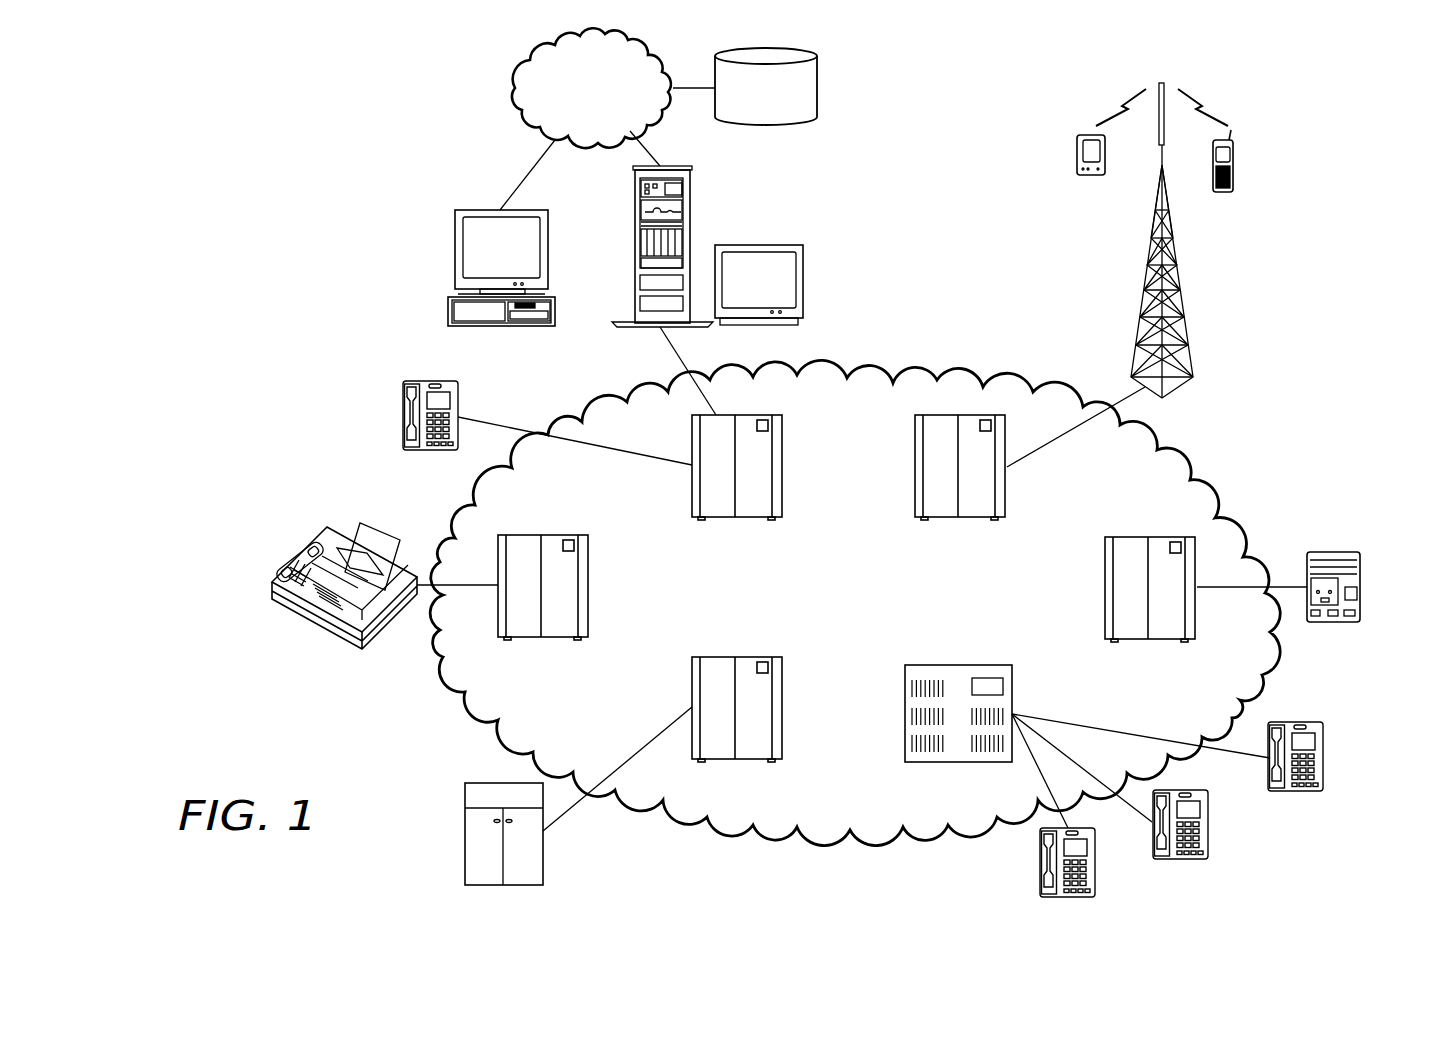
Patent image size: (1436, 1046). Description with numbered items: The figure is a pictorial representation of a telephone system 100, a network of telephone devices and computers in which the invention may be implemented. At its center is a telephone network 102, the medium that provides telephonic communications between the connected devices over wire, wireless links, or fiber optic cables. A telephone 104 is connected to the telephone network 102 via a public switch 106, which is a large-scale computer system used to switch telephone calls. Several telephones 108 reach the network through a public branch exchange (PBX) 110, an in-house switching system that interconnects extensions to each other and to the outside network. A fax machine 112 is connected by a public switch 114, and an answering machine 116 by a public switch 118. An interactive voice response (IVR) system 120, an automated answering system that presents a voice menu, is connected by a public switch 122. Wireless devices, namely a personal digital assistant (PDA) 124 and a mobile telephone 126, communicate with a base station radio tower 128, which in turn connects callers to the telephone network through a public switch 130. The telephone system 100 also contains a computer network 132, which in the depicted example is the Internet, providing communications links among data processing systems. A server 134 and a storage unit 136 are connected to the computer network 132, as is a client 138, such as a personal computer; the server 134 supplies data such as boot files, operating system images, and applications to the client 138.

The telephone system 100 is at (242, 161).
The telephone network 102 is at (933, 373).
The telephone 104 is at (403, 413).
The public switch 106 is at (782, 455).
The telephones 108 is at (1040, 862).
The public branch exchange (PBX) 110 is at (905, 713).
The fax machine 112 is at (295, 556).
The public switch 114 is at (588, 585).
The answering machine 116 is at (1332, 552).
The public switch 118 is at (1105, 585).
The interactive voice response (IVR) system 120 is at (465, 835).
The public switch 122 is at (718, 657).
The personal digital assistant (PDA) 124 is at (1075, 155).
The mobile telephone 126 is at (1235, 166).
The base station radio tower 128 is at (1190, 306).
The public switch 130 is at (1007, 485).
The computer network 132 is at (515, 86).
The server 134 is at (803, 284).
The storage unit 136 is at (818, 90).
The client 138 is at (455, 250).